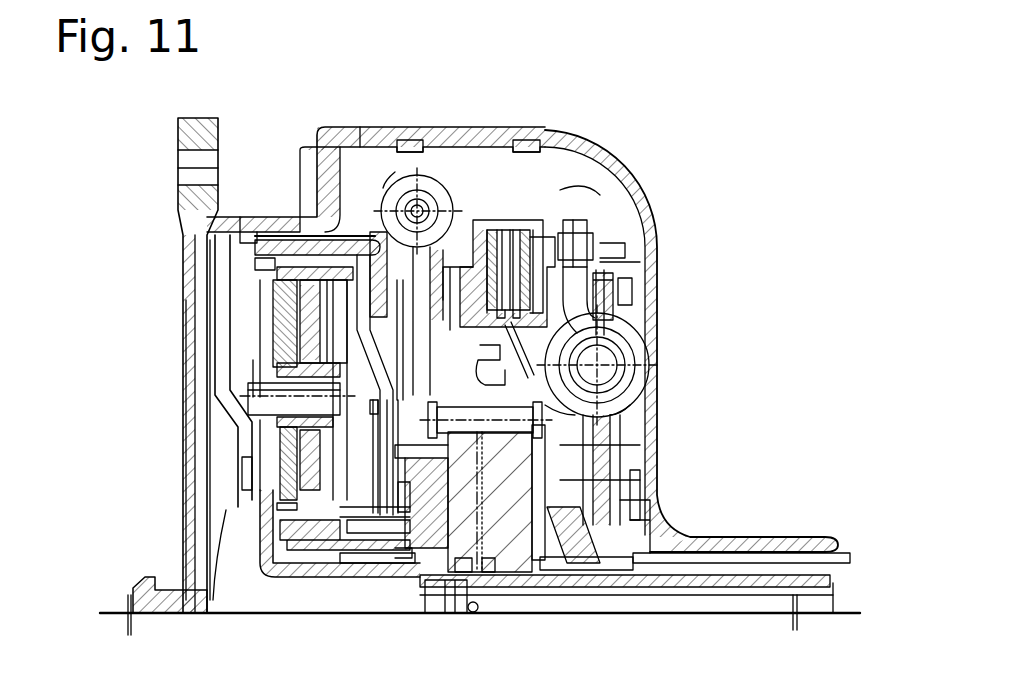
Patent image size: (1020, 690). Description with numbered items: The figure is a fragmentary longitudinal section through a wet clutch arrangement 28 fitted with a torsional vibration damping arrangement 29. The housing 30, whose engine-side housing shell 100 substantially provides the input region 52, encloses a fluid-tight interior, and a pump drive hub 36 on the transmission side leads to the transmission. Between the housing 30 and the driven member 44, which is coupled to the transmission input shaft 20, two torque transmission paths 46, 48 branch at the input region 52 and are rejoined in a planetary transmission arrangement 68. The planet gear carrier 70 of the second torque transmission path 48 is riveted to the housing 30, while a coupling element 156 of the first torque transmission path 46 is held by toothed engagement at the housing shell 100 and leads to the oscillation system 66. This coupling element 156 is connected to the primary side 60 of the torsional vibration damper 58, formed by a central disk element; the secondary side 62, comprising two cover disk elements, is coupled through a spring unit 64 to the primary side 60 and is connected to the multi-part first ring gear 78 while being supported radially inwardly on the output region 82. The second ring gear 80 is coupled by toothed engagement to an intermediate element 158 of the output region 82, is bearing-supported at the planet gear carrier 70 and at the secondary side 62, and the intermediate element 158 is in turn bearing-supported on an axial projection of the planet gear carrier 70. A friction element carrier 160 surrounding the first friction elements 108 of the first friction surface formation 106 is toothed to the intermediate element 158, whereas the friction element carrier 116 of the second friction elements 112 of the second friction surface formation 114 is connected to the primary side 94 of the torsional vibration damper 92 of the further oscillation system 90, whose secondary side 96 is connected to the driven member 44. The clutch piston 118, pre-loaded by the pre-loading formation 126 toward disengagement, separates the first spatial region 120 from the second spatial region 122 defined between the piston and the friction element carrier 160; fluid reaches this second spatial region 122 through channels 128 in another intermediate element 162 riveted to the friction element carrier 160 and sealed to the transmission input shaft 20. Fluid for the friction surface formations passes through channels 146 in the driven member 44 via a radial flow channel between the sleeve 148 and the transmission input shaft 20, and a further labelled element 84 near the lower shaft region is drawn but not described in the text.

The transmission input shaft 20 is at (743, 582).
The wet clutch arrangement 28 is at (780, 128).
The torsional vibration damping arrangement 29 is at (707, 99).
The housing 30 is at (387, 125).
The pump drive hub 36 is at (792, 536).
The driven member 44 is at (567, 547).
The first torque transmission path 46 is at (360, 205).
The second torque transmission path 48 is at (283, 582).
The input region 52 is at (180, 436).
The torsional vibration damper 58 is at (427, 157).
The primary side 60 is at (340, 248).
The secondary side 62 is at (272, 282).
The spring unit 64 is at (433, 190).
The oscillation system 66 is at (473, 163).
The planetary transmission arrangement 68 is at (253, 558).
The planet gear carrier 70 is at (262, 521).
The first ring gear 78 is at (305, 262).
The second ring gear 80 is at (265, 342).
The output region 82 is at (430, 557).
The lower bearing 84 is at (477, 624).
The further oscillation system 90 is at (625, 262).
The torsional vibration damper 92 is at (658, 380).
The primary side 94 is at (640, 286).
The secondary side 96 is at (600, 480).
The engine-side housing shell 100 is at (238, 213).
The first friction surface formation 106 is at (495, 215).
The first friction elements 108 is at (605, 250).
The second friction elements 112 is at (620, 274).
The second friction surface formation 114 is at (593, 192).
The friction element carrier 116 is at (620, 190).
The clutch piston 118 is at (605, 357).
The first spatial region 120 is at (595, 185).
The second spatial region 122 is at (600, 335).
The pre-loading formation 126 is at (635, 398).
The channels 128 is at (482, 495).
The channels 146 is at (637, 530).
The sleeve 148 is at (847, 555).
The coupling element 156 is at (374, 127).
The intermediate element 158 is at (390, 556).
The friction element carrier 160 is at (513, 217).
The intermediate element 162 is at (522, 522).